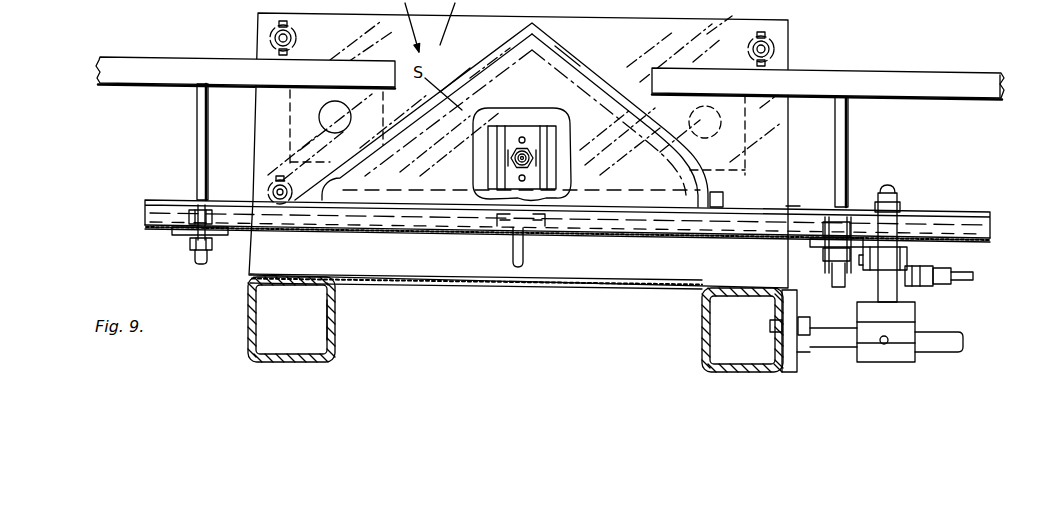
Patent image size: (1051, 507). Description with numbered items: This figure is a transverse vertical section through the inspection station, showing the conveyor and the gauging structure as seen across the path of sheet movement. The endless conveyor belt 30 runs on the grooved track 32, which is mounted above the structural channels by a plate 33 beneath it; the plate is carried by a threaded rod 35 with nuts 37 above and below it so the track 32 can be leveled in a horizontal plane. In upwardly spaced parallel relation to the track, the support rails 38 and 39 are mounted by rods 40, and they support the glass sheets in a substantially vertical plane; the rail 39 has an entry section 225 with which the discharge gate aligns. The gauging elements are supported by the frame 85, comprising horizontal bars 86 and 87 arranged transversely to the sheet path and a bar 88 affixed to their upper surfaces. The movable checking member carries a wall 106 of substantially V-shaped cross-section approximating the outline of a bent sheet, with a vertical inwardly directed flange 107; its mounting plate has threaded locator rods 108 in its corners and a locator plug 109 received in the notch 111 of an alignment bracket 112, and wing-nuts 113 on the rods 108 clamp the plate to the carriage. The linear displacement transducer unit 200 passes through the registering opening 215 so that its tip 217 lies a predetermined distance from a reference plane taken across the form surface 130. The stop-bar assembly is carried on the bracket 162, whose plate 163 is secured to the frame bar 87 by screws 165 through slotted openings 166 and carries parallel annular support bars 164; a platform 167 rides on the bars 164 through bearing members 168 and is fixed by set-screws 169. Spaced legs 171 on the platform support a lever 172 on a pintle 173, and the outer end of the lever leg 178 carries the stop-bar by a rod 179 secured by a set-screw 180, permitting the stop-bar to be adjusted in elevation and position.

The endless conveyor belt 30 is at (223, 198).
The grooved track 32 is at (178, 198).
The plate 33 is at (172, 232).
The threaded rod 35 is at (208, 262).
The nut 37 is at (190, 245).
The support rail 38 is at (226, 68).
The support rail 39 is at (848, 70).
The rod 40 is at (203, 124).
The frame 85 is at (339, 311).
The horizontal bar 86 is at (330, 330).
The horizontal bar 87 is at (702, 333).
The bar 88 is at (412, 270).
The wall 106 is at (490, 50).
The flange 107 is at (557, 40).
The locator rod 108 is at (296, 38).
The locator plug 109 is at (510, 233).
The notch 111 is at (543, 223).
The alignment bracket 112 is at (483, 228).
The wing-nut 113 is at (290, 21).
The form surface 130 is at (572, 45).
The bracket 162 is at (800, 353).
The plate 163 is at (782, 340).
The annular support bar 164 is at (930, 342).
The screw 165 is at (807, 322).
The slotted opening 166 is at (818, 252).
The platform 167 is at (900, 317).
The bearing member 168 is at (900, 335).
The set-screw 169 is at (884, 344).
The leg 171 is at (910, 265).
The lever 172 is at (724, 194).
The pintle 173 is at (903, 248).
The lever leg 178 is at (900, 201).
The rod 179 is at (803, 200).
The set-screw 180 is at (888, 192).
The linear displacement transducer unit 200 is at (541, 147).
The registering opening 215 is at (517, 124).
The tip 217 is at (536, 150).
The entry section 225 is at (905, 87).